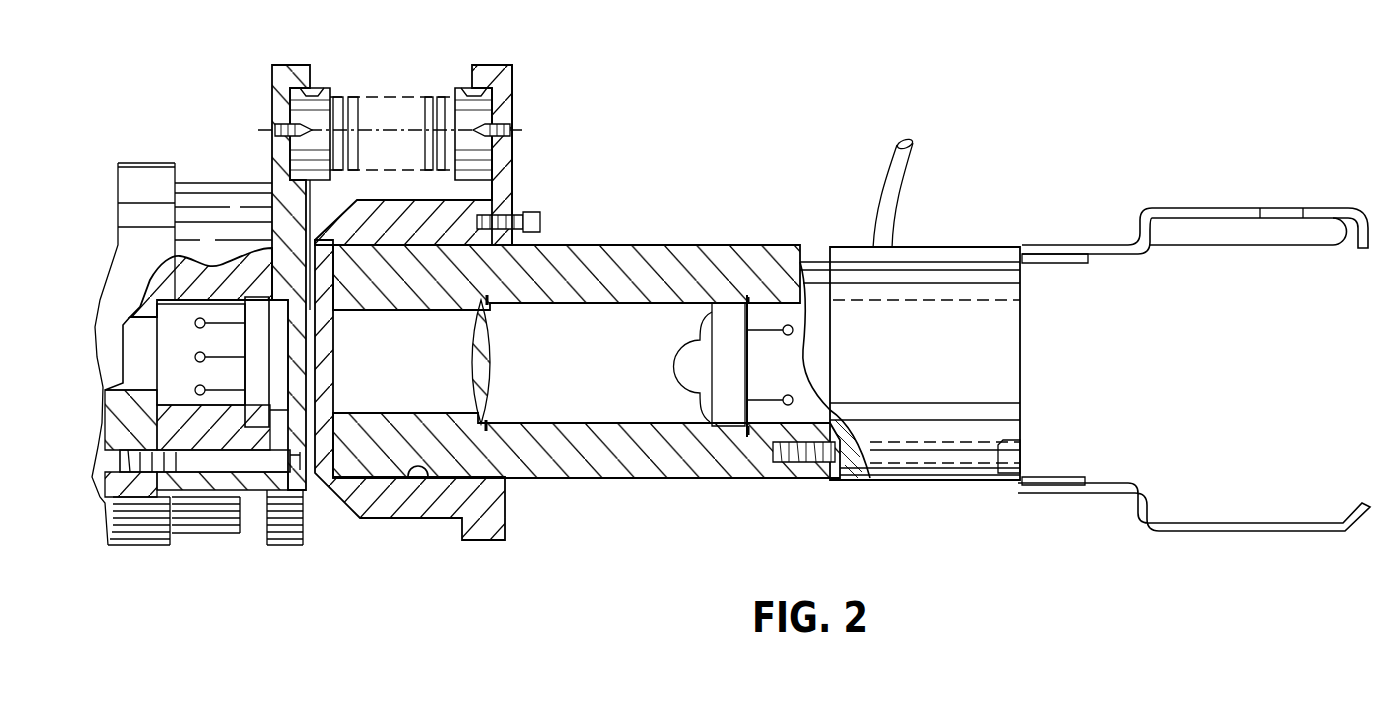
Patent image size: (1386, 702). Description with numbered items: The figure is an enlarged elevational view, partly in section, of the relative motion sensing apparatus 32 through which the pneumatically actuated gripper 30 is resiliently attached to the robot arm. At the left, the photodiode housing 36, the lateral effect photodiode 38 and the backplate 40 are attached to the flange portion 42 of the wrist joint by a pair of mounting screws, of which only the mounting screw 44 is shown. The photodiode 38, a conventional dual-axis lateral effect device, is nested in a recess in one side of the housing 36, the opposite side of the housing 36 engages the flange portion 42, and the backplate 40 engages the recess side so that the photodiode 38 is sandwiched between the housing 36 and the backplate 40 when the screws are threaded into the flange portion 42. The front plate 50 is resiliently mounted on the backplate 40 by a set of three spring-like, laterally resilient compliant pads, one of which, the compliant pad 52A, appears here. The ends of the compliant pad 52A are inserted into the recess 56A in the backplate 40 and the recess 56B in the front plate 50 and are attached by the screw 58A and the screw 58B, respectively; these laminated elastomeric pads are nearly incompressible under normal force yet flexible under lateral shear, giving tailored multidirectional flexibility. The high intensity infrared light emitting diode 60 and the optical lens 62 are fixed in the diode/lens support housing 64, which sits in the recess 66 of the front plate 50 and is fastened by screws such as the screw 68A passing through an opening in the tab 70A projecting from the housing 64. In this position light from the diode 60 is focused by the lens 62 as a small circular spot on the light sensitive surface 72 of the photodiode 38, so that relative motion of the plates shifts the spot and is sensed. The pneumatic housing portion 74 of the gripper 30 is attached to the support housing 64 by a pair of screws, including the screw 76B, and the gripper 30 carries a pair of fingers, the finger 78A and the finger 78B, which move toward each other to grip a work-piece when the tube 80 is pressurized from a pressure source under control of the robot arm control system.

The pneumatically actuated gripper 30 is at (1062, 233).
The relative motion sensing apparatus 32 is at (604, 83).
The photodiode housing 36 is at (207, 193).
The lateral effect photodiode 38 is at (210, 463).
The backplate 40 is at (290, 67).
The flange portion 42 is at (135, 170).
The mounting screw 44 is at (255, 463).
The front plate 50 is at (500, 70).
The compliant pad 52A is at (370, 95).
The recess 56A is at (315, 88).
The recess 56B is at (450, 93).
The screw 58A is at (272, 132).
The screw 58B is at (517, 128).
The light emitting diode 60 is at (690, 347).
The optical lens 62 is at (493, 347).
The diode/lens support housing 64 is at (642, 255).
The recess 66 is at (408, 476).
The screw 68A is at (540, 223).
The tab 70A is at (518, 206).
The light sensitive surface 72 is at (333, 347).
The pneumatic housing portion 74 is at (923, 258).
The screw 76B is at (833, 482).
The finger 78A is at (1223, 207).
The finger 78B is at (1175, 531).
The tube 80 is at (890, 182).